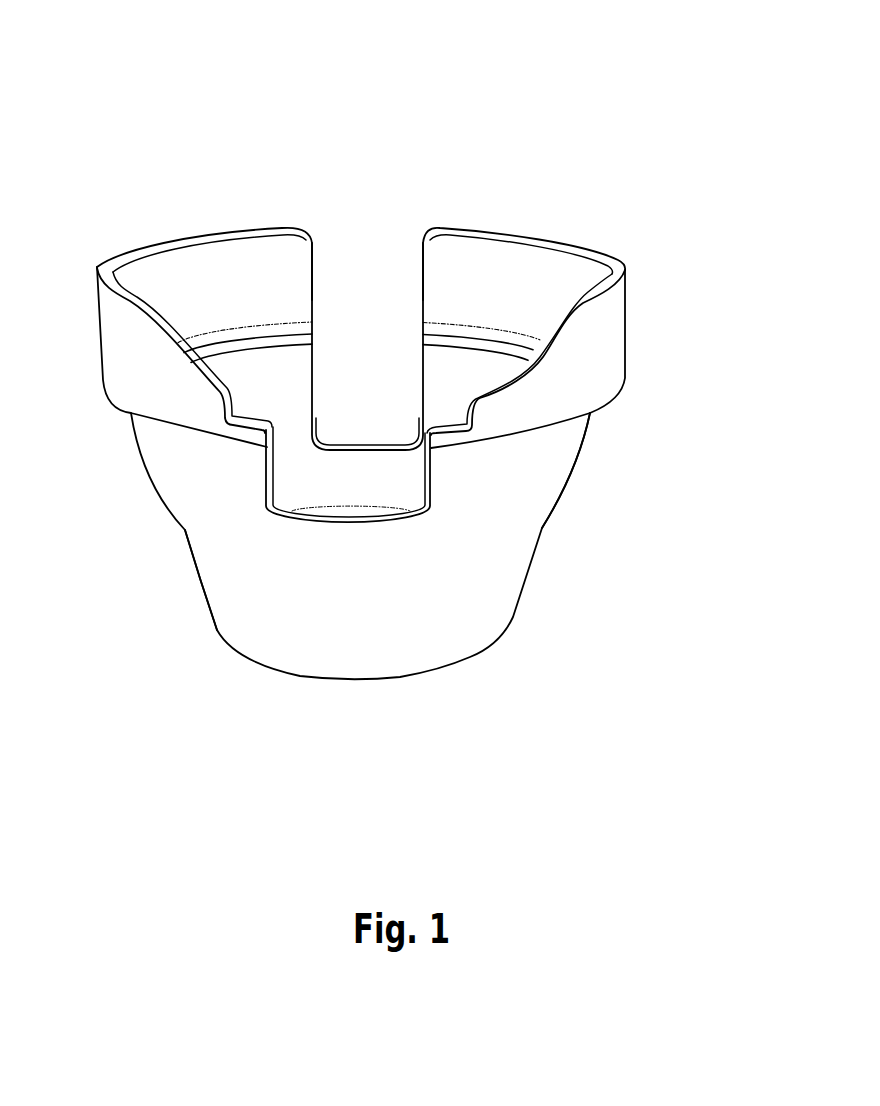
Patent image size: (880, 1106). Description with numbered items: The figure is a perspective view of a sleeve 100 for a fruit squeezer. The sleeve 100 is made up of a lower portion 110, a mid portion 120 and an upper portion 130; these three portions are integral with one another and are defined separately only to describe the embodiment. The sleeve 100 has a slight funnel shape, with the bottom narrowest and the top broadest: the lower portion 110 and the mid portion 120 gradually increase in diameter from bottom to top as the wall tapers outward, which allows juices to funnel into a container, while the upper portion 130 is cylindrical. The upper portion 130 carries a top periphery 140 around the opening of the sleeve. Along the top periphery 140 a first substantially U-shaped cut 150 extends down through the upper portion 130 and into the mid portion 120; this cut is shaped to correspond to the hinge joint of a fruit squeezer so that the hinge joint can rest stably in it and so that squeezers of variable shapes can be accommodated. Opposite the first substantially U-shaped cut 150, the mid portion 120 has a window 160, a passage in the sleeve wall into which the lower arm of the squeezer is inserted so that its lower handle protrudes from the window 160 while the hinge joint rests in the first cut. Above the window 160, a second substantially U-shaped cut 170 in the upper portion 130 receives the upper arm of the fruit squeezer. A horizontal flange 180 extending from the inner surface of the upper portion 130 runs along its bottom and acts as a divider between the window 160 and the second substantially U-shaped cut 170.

The sleeve 100 is at (652, 76).
The lower portion 110 is at (509, 588).
The mid portion 120 is at (582, 468).
The upper portion 130 is at (625, 343).
The top periphery 140 is at (624, 256).
The first substantially U-shaped cut 150 is at (313, 536).
The window 160 is at (403, 389).
The second substantially U-shaped cut 170 is at (327, 268).
The inner ledge ring 180 is at (267, 343).